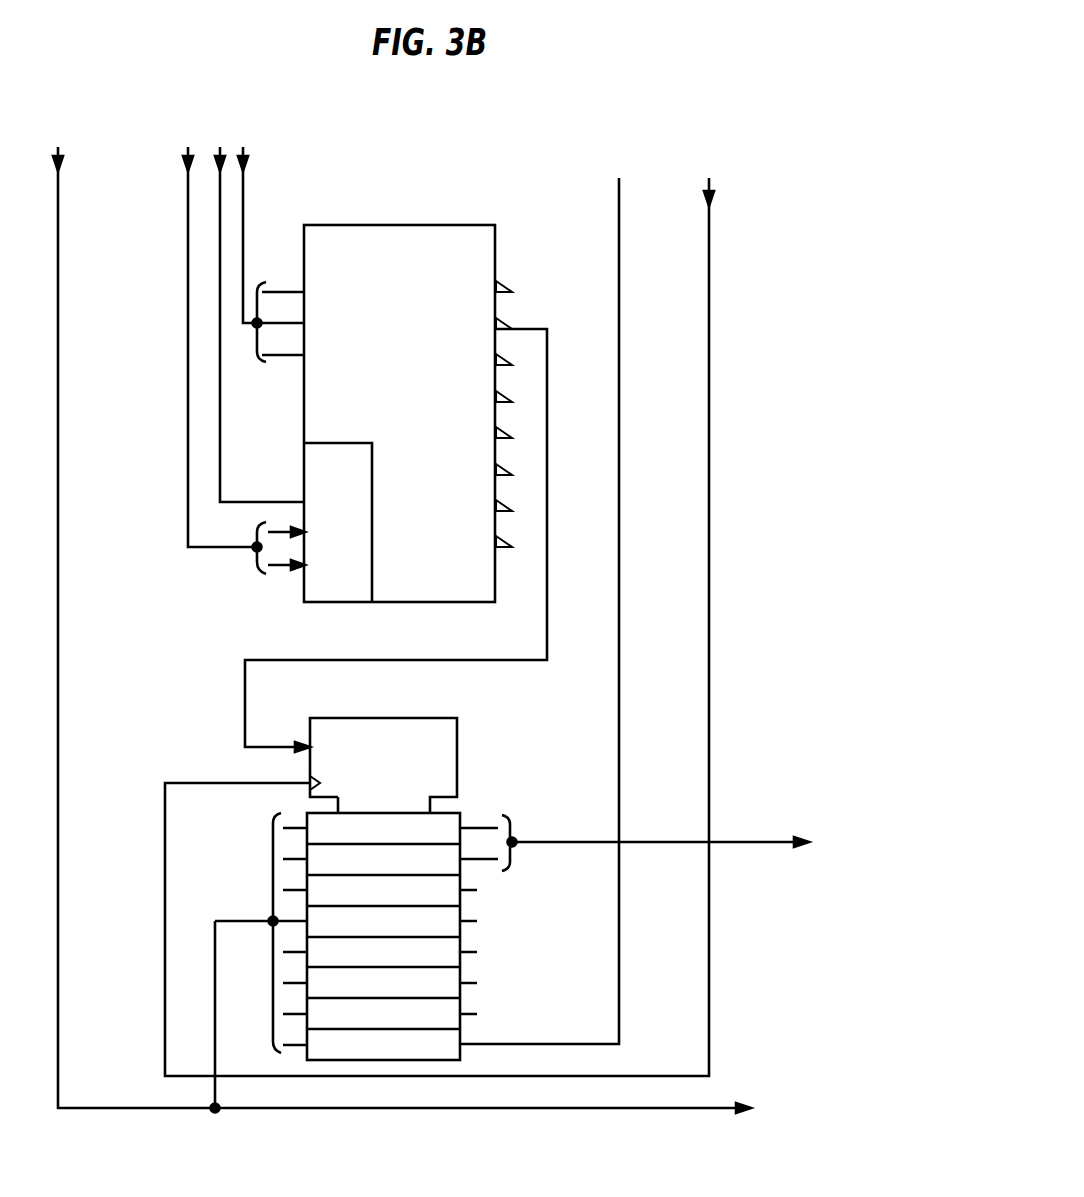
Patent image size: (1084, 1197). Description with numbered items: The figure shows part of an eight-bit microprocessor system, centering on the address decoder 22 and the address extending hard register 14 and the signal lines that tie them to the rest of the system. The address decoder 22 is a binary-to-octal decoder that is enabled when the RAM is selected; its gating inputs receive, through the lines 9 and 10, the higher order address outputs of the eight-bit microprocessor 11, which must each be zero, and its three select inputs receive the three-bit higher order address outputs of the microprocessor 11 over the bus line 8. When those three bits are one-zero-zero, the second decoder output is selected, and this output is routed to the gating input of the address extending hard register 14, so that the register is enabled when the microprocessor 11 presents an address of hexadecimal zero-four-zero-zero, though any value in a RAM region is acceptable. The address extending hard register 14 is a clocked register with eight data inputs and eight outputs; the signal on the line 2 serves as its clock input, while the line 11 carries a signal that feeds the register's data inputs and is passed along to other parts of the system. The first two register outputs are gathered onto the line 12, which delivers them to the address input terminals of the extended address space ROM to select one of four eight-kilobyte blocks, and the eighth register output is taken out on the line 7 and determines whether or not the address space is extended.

The address decoder 22 is at (410, 602).
The address extending hard register 14 is at (428, 718).
The signal line * 2 is at (455, 626).
The signal line * 7 is at (555, 610).
The bus line 8 is at (271, 236).
The line 9 is at (255, 310).
The line 10 is at (201, 348).
The eight-bit microprocessor 11 is at (402, 642).
The line 12 is at (655, 838).